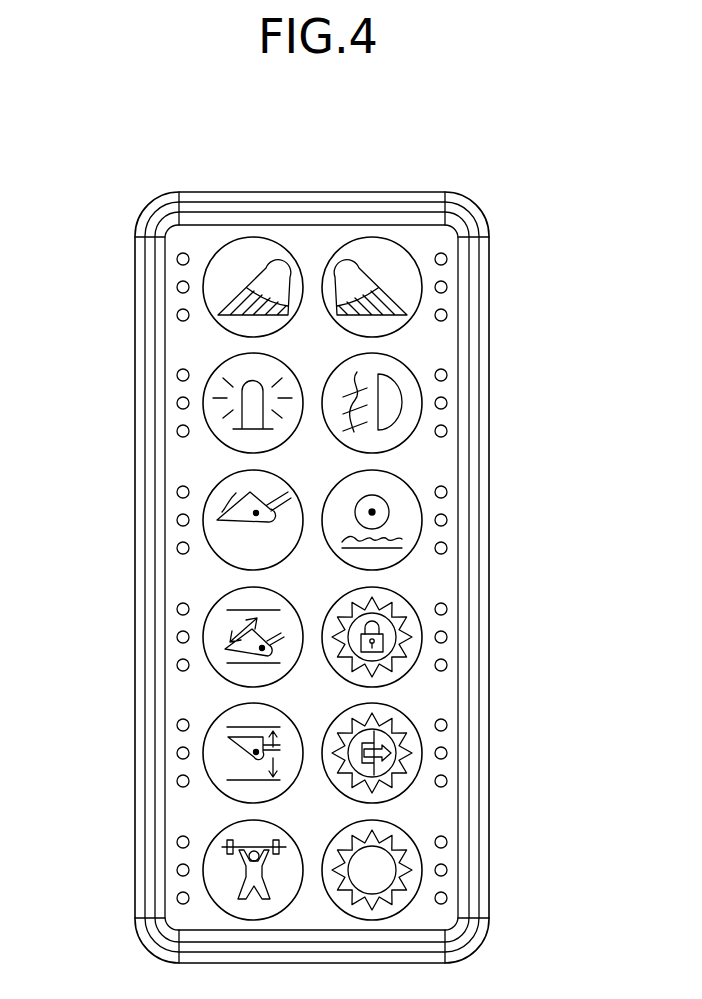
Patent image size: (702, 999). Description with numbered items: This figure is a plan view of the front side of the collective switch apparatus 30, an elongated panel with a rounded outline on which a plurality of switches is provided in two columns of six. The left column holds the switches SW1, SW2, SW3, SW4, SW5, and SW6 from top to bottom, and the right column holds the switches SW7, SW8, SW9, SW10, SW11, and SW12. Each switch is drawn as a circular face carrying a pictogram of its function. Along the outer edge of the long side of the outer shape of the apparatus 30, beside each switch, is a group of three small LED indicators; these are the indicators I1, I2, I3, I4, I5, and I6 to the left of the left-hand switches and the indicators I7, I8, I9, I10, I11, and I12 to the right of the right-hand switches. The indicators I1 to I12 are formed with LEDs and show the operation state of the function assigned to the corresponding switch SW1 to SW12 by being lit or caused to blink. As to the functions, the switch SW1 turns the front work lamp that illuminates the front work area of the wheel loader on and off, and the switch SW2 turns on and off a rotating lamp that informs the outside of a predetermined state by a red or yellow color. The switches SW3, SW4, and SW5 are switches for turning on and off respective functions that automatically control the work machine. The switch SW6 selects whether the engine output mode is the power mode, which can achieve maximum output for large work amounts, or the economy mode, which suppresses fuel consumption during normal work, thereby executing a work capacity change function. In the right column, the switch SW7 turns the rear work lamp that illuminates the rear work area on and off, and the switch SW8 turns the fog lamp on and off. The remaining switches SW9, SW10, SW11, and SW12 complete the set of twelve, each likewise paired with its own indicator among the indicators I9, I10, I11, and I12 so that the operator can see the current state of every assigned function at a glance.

The collective switch apparatus 30 is at (406, 163).
The indicator I1 is at (176, 288).
The indicator I2 is at (176, 404).
The indicator I3 is at (176, 521).
The indicator I4 is at (176, 638).
The indicator I5 is at (176, 754).
The indicator I6 is at (176, 871).
The indicator I7 is at (448, 285).
The indicator I8 is at (448, 401).
The indicator I9 is at (448, 518).
The indicator I10 is at (448, 635).
The indicator I11 is at (448, 751).
The indicator I12 is at (448, 868).
The switch SW1 is at (221, 328).
The switch SW2 is at (221, 444).
The switch SW3 is at (221, 561).
The switch SW4 is at (221, 678).
The switch SW5 is at (221, 794).
The switch SW6 is at (221, 911).
The switch SW7 is at (403, 327).
The switch SW8 is at (403, 443).
The switch SW9 is at (403, 560).
The switch SW10 is at (403, 677).
The switch SW11 is at (403, 793).
The switch SW12 is at (403, 910).